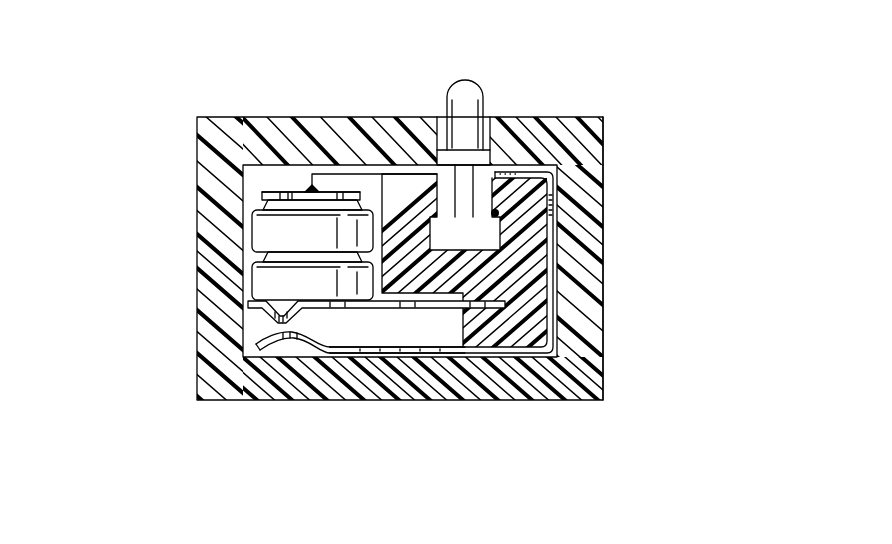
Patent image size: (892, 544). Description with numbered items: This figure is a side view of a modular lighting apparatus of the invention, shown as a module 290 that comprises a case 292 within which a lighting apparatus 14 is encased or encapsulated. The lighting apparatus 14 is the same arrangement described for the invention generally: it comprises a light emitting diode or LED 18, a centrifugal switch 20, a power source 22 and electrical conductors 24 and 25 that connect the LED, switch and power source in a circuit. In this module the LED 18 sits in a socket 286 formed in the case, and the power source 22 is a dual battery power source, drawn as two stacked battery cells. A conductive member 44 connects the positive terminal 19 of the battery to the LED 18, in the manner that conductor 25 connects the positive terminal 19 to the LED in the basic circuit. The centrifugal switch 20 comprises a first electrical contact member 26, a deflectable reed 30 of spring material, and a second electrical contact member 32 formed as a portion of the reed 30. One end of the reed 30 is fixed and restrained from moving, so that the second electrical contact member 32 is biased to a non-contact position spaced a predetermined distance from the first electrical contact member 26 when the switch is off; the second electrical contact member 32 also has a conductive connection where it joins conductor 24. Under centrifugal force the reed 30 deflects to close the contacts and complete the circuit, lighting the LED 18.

The lighting apparatus 14 is at (259, 183).
The light emitting diode 18 is at (465, 84).
The positive terminal 19 is at (262, 204).
The centrifugal switch 20 is at (115, 293).
The power source 22 is at (262, 279).
The electrical conductor 24 is at (490, 177).
The electrical conductor 25 is at (297, 192).
The first electrical contact member 26 is at (283, 334).
The deflectable reed 30 is at (300, 352).
The second electrical contact member 32 is at (266, 316).
The conductive member 44 is at (273, 191).
The socket 286 is at (430, 165).
The module 290 is at (652, 172).
The case 292 is at (592, 282).